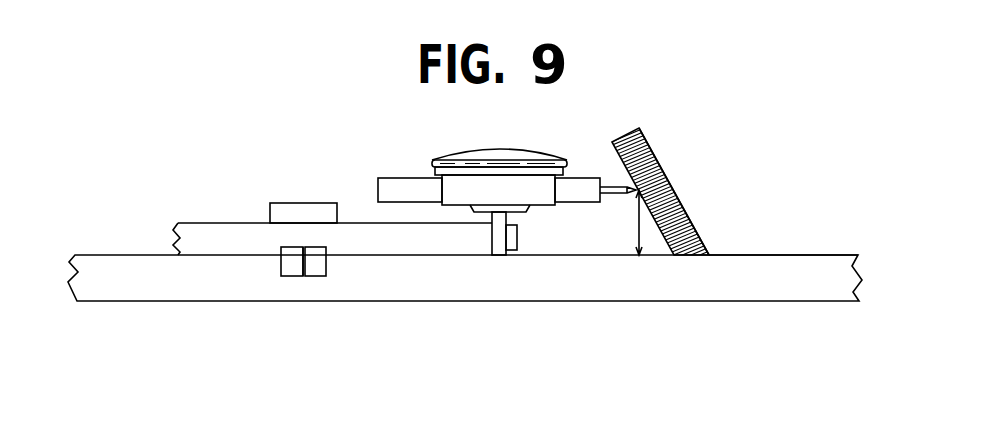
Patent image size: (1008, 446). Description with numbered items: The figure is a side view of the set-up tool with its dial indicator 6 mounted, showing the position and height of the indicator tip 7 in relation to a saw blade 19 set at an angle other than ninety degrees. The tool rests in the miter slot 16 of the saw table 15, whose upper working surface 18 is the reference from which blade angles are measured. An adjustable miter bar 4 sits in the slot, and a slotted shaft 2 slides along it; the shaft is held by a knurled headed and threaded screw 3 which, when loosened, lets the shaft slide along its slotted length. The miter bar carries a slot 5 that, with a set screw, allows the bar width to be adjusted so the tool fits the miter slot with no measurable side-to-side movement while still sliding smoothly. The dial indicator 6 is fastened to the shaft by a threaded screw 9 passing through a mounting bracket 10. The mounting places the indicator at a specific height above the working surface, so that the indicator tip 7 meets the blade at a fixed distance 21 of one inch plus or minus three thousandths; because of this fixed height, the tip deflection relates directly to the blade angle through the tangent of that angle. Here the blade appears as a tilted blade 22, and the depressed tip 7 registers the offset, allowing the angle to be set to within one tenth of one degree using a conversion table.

The slotted shaft 2 is at (215, 222).
The knurled headed and threaded screw 3 is at (270, 202).
The adjustable miter bar 4 is at (280, 267).
The slot 5 is at (306, 262).
The dial indicator 6 is at (498, 152).
The indicator tip 7 is at (628, 187).
The threaded screw 9 is at (520, 237).
The mounting bracket 10 is at (498, 235).
The table 15 is at (700, 302).
The miter slot 16 is at (297, 287).
The working surface 18 is at (755, 255).
The saw blade 19 is at (639, 129).
The distance 21 is at (639, 228).
The tilted blade 22 is at (687, 217).